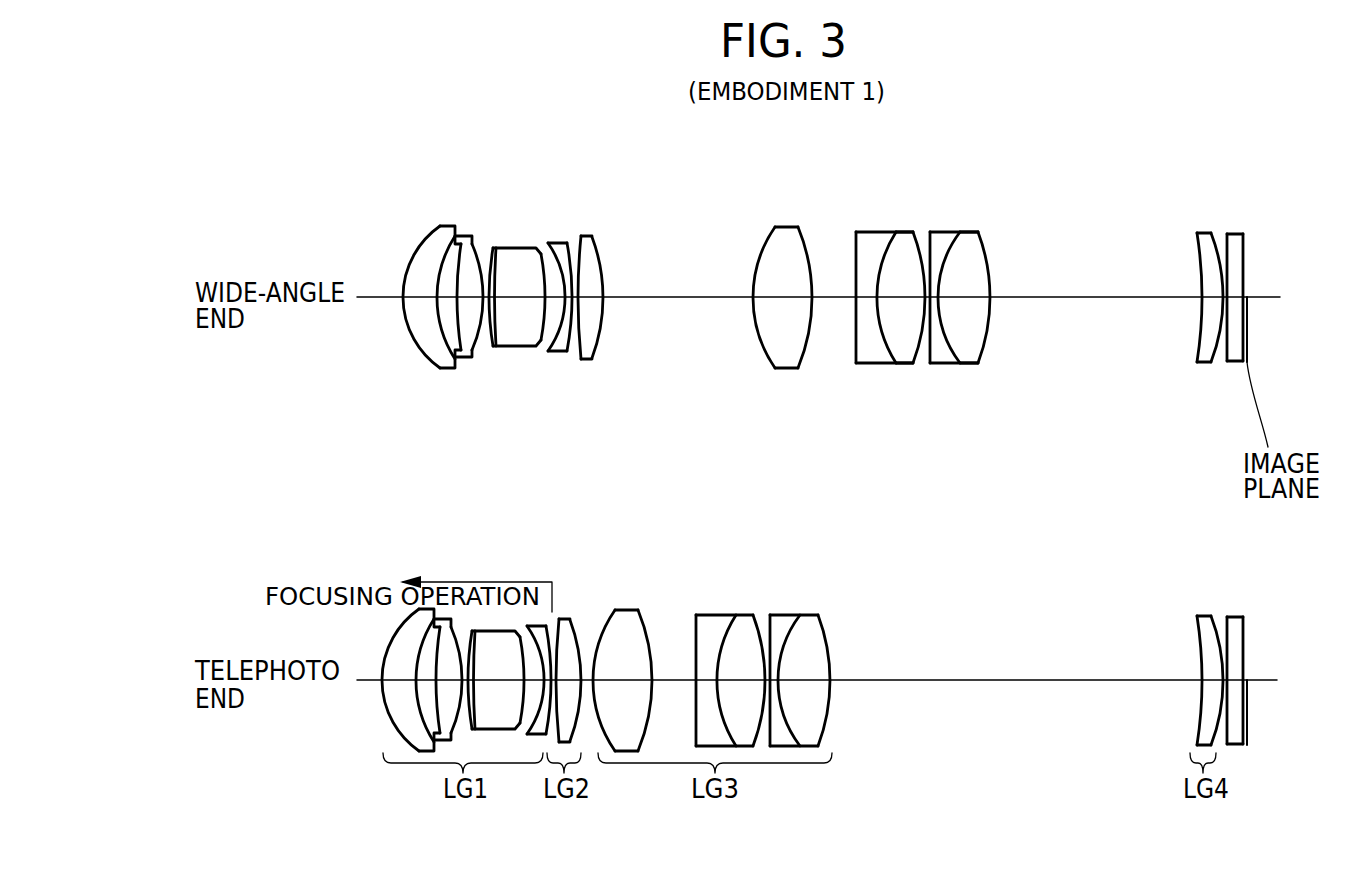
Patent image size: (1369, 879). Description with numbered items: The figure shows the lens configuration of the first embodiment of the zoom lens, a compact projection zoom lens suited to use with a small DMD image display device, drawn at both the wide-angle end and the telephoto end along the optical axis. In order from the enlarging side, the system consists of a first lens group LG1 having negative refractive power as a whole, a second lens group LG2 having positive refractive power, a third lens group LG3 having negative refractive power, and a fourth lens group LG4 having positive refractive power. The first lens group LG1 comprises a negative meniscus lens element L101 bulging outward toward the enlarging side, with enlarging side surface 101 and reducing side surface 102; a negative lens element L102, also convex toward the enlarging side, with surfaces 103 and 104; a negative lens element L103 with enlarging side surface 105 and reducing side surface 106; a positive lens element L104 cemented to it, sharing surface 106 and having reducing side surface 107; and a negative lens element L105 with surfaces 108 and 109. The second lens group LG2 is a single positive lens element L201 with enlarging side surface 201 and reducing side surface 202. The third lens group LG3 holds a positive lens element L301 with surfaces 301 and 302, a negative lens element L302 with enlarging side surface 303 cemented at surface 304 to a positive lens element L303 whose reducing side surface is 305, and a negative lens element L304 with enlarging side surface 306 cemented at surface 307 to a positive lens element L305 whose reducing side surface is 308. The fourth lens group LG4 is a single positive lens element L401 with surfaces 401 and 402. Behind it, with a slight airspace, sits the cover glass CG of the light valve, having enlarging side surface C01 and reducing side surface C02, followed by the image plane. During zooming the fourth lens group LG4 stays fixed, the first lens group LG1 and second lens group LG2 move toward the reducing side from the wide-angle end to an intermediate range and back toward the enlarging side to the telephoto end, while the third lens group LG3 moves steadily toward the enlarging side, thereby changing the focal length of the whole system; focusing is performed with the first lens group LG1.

The first lens group LG1 is at (502, 452).
The second lens group LG2 is at (608, 453).
The third lens group LG3 is at (860, 450).
The fourth lens group LG4 is at (1201, 606).
The negative lens element L101 is at (430, 368).
The negative lens element L102 is at (463, 358).
The negative lens element L103 is at (485, 352).
The positive lens element L104 is at (523, 340).
The negative lens element L105 is at (560, 353).
The positive lens element L201 is at (593, 352).
The positive lens element L301 is at (787, 353).
The negative lens element L302 is at (868, 347).
The positive lens element L303 is at (903, 343).
The negative lens element L304 is at (942, 347).
The positive lens element L305 is at (970, 348).
The positive lens element L401 is at (1208, 348).
The cover glass CG is at (1233, 347).
The enlarging side surface 101 is at (425, 237).
The reducing side surface 102 is at (430, 243).
The enlarging side surface 103 is at (442, 227).
The reducing side surface 104 is at (458, 243).
The enlarging side surface 105 is at (477, 247).
The cemented surface 106 is at (493, 245).
The reducing side surface 107 is at (530, 240).
The enlarging side surface 108 is at (547, 242).
The reducing side surface 109 is at (563, 242).
The enlarging side surface 201 is at (580, 238).
The reducing side surface 202 is at (595, 245).
The enlarging side surface 301 is at (767, 242).
The reducing side surface 302 is at (805, 237).
The enlarging side surface 303 is at (865, 235).
The cemented surface 304 is at (883, 240).
The reducing side surface 305 is at (922, 240).
The enlarging side surface 306 is at (938, 242).
The cemented surface 307 is at (960, 245).
The reducing side surface 308 is at (987, 248).
The enlarging side surface 401 is at (1197, 257).
The reducing side surface 402 is at (1198, 242).
The enlarging side surface C01 is at (1223, 240).
The reducing side surface C02 is at (1233, 240).